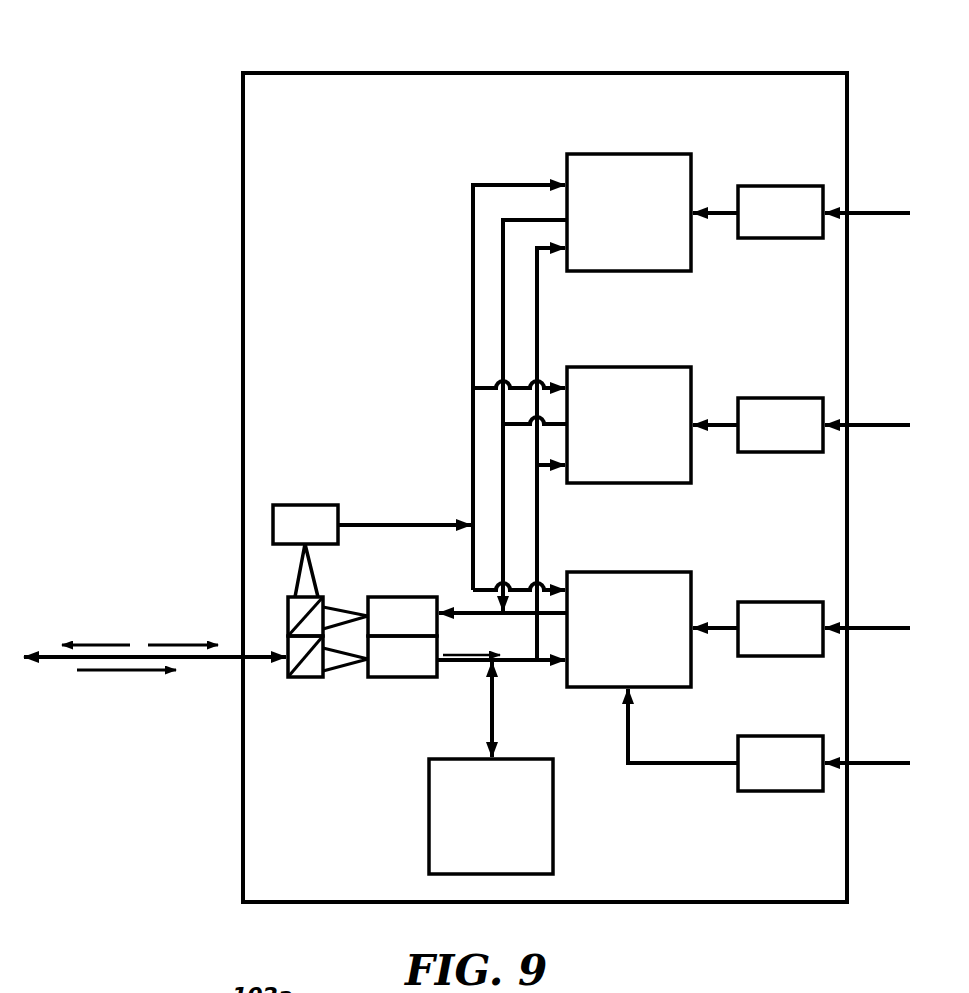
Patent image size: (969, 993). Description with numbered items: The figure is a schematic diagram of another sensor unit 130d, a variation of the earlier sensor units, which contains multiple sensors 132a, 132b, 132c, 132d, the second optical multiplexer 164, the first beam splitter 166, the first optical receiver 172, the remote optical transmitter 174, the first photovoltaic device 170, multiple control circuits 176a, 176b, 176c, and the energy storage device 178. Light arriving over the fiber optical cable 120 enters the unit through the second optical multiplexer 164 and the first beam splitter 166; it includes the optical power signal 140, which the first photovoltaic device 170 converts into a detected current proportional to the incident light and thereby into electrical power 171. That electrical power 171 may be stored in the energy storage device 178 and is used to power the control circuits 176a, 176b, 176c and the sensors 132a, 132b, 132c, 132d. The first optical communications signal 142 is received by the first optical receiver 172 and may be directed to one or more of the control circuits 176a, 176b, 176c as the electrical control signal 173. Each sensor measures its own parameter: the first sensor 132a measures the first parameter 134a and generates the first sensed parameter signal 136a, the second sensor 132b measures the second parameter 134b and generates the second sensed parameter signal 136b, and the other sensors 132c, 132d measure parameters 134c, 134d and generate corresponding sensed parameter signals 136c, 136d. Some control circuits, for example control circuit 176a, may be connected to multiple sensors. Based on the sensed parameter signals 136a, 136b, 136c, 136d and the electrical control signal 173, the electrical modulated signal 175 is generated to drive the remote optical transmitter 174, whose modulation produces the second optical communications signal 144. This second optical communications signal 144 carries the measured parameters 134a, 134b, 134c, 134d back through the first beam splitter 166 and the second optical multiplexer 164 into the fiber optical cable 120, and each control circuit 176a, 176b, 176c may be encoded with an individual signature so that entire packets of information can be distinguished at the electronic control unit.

The sensor unit 130d is at (385, 73).
The control circuit 176c is at (632, 154).
The control circuit 176b is at (630, 367).
The control circuit 176a is at (645, 572).
The sensor 132d is at (775, 186).
The sensor 132c is at (775, 398).
The second sensor 132b is at (775, 602).
The first sensor 132a is at (775, 736).
The measured parameter 134d is at (878, 213).
The measured parameter 134c is at (878, 425).
The second parameter 134b is at (878, 628).
The first parameter 134a is at (878, 763).
The sensed parameter signal 136d is at (723, 215).
The sensed parameter signal 136c is at (723, 427).
The second sensed parameter signal 136b is at (723, 630).
The first sensed parameter signal 136a is at (683, 765).
The electrical control signal 173 is at (372, 525).
The electrical modulated signal 175 is at (460, 613).
The electrical power 171 is at (494, 650).
The first optical receiver 172 is at (305, 505).
The first beam splitter 166 is at (288, 610).
The second optical multiplexer 164 is at (288, 667).
The remote optical transmitter 174 is at (403, 597).
The first photovoltaic device 170 is at (400, 678).
The energy storage device 178 is at (429, 827).
The fiber optical cable 120 is at (155, 701).
The second optical communications signal 144 is at (128, 640).
The first optical communications signal 142 is at (190, 640).
The optical power signal 140 is at (145, 698).